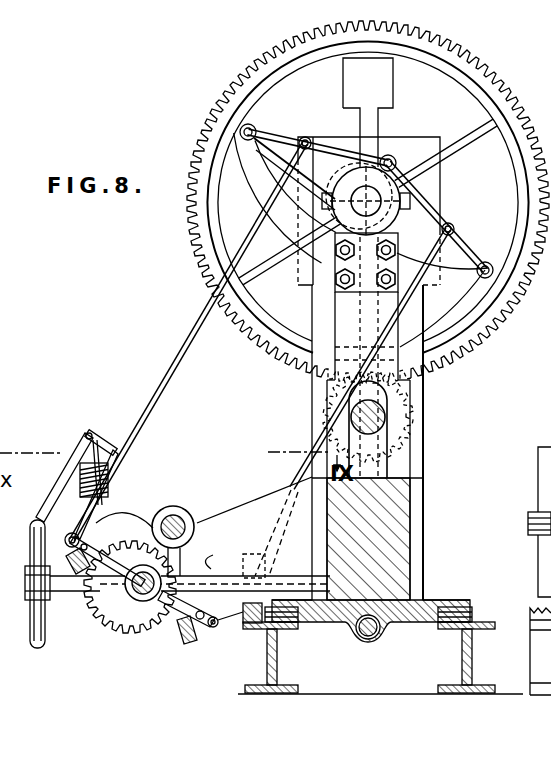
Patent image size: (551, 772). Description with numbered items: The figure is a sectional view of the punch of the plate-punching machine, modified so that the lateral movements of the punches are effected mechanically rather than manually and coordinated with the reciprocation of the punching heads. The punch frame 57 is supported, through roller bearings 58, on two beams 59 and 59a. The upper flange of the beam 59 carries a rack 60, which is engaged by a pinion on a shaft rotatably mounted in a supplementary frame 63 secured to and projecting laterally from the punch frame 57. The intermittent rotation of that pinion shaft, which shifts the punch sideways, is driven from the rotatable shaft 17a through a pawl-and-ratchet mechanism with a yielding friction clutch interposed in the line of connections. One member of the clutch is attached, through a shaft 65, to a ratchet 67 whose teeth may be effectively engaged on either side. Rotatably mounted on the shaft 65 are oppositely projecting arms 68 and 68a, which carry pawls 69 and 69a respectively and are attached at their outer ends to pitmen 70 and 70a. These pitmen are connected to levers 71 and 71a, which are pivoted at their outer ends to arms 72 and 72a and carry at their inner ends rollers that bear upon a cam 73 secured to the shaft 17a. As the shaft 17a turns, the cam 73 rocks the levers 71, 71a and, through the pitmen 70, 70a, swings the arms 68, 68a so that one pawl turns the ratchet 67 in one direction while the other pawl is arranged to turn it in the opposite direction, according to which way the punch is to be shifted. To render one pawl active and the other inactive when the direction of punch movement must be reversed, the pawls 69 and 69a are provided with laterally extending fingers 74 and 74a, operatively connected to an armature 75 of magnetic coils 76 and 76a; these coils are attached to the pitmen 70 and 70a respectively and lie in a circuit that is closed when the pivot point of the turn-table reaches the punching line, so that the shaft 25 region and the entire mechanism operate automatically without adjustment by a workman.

The rotatable shaft 17a is at (372, 190).
The shaft 25 is at (180, 519).
The punch frame 57 is at (405, 520).
The roller bearings 58 is at (287, 607).
The beam 59 is at (278, 670).
The beam 59a is at (462, 656).
The rack 60 is at (228, 628).
The supplementary frame 63 is at (265, 499).
The shaft 65 is at (140, 586).
The ratchet 67 is at (128, 630).
The arm 68 is at (110, 596).
The arm 68a is at (180, 640).
The pawl 69 is at (121, 528).
The pawl 69a is at (206, 563).
The pitman 70 is at (173, 372).
The pitman 70a is at (323, 444).
The lever 71 is at (281, 139).
The lever 71a is at (430, 210).
The arm 72 is at (257, 190).
The arm 72a is at (462, 288).
The cam 73 is at (345, 172).
The laterally extending finger 74 is at (66, 535).
The laterally extending finger 74a is at (226, 647).
The armature 75 is at (92, 445).
The magnetic coil 76 is at (80, 479).
The magnetic coil 76a is at (262, 577).